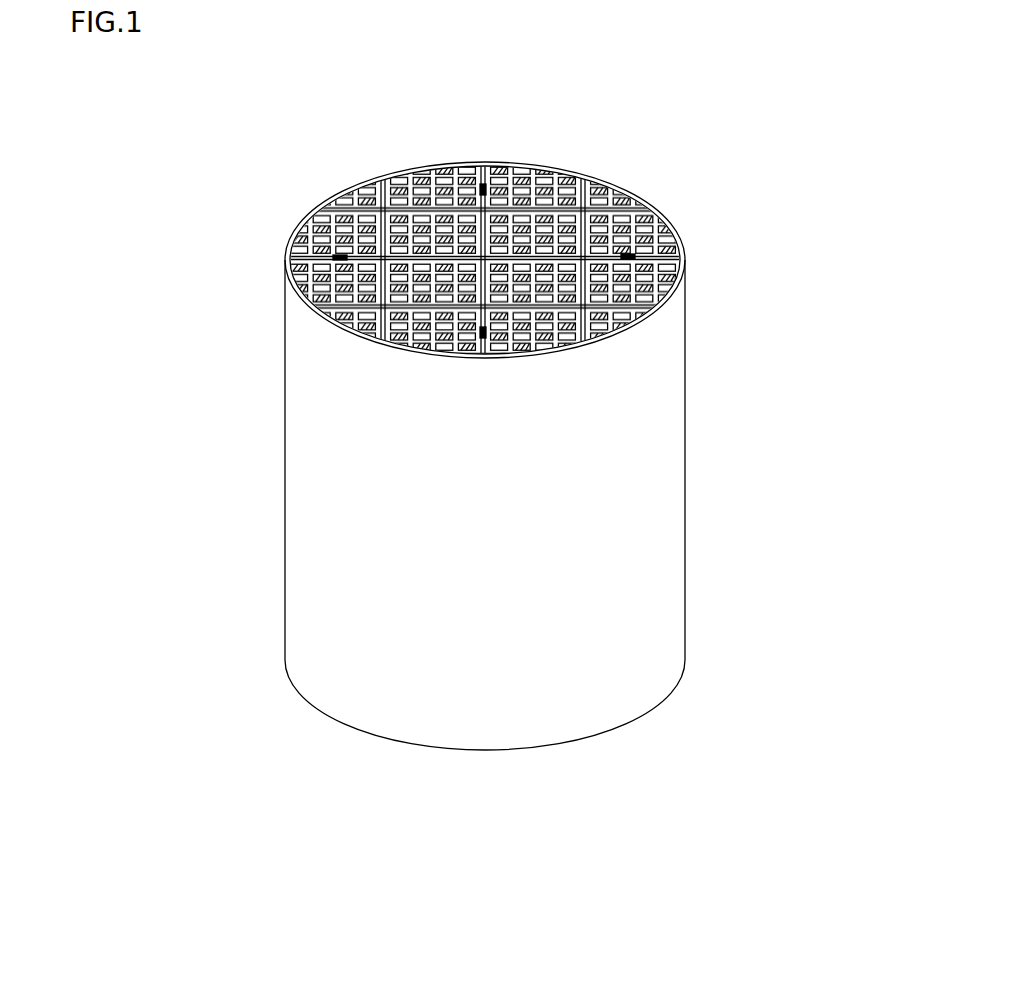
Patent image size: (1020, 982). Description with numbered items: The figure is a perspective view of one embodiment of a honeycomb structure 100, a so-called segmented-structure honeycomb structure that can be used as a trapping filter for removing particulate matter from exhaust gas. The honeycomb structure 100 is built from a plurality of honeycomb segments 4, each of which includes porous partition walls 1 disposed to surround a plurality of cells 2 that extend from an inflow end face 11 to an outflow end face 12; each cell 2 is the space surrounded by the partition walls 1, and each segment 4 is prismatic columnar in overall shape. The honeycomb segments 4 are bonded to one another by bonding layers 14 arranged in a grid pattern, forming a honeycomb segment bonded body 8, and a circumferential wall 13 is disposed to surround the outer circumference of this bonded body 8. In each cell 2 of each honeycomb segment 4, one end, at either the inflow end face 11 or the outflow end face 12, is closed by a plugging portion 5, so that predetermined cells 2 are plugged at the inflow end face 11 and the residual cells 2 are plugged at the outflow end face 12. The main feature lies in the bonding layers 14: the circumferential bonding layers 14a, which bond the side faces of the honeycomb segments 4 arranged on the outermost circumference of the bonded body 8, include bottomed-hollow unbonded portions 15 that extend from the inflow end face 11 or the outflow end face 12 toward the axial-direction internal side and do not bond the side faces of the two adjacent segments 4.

The honeycomb structure 100 is at (800, 92).
The partition walls 1 is at (583, 182).
The cells 2 is at (630, 195).
The honeycomb segments 4 is at (640, 203).
The plugging portion 5 is at (527, 215).
The honeycomb segment bonded body 8 is at (631, 195).
The inflow end face 11 is at (346, 163).
The outflow end face 12 is at (327, 716).
The circumferential wall 13 is at (637, 380).
The bonding layers 14 is at (396, 206).
The circumferential bonding layers 14a is at (484, 188).
The unbonded portions 15 is at (481, 187).